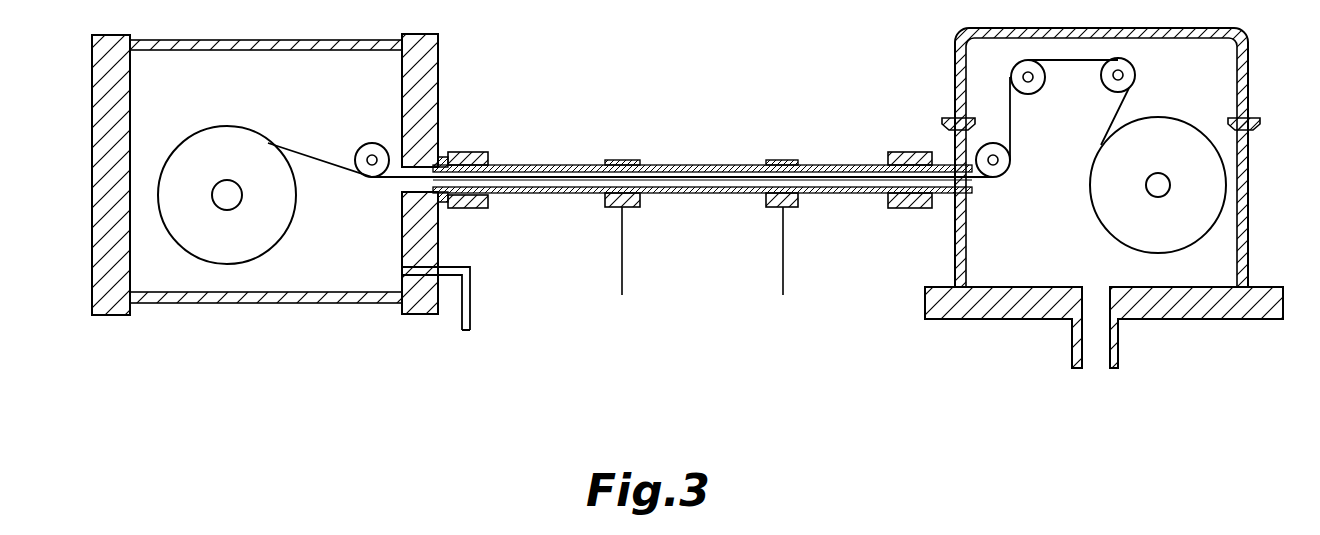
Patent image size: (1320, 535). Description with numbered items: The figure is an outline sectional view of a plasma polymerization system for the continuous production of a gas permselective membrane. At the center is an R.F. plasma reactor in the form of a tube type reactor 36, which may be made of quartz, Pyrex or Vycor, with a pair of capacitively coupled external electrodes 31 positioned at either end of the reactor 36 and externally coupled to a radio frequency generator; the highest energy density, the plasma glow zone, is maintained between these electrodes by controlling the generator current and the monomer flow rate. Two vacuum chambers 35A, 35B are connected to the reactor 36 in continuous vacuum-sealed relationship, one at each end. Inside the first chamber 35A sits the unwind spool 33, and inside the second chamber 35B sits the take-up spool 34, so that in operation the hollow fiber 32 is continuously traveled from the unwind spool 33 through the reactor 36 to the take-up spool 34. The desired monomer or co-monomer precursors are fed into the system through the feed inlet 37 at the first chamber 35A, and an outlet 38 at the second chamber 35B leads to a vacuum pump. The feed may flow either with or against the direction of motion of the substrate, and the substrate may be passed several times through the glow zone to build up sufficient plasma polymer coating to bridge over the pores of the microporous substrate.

The capacitively coupled external electrodes 31 is at (766, 162).
The hollow fiber 32 is at (336, 164).
The unwind spool 33 is at (234, 262).
The take-up spool 34 is at (1206, 190).
The vacuum chamber 35A is at (336, 298).
The vacuum chamber 35B is at (1036, 276).
The tube type reactor 36 is at (847, 165).
The feed inlet 37 is at (465, 338).
The outlet to a vacuum pump 38 is at (1095, 368).